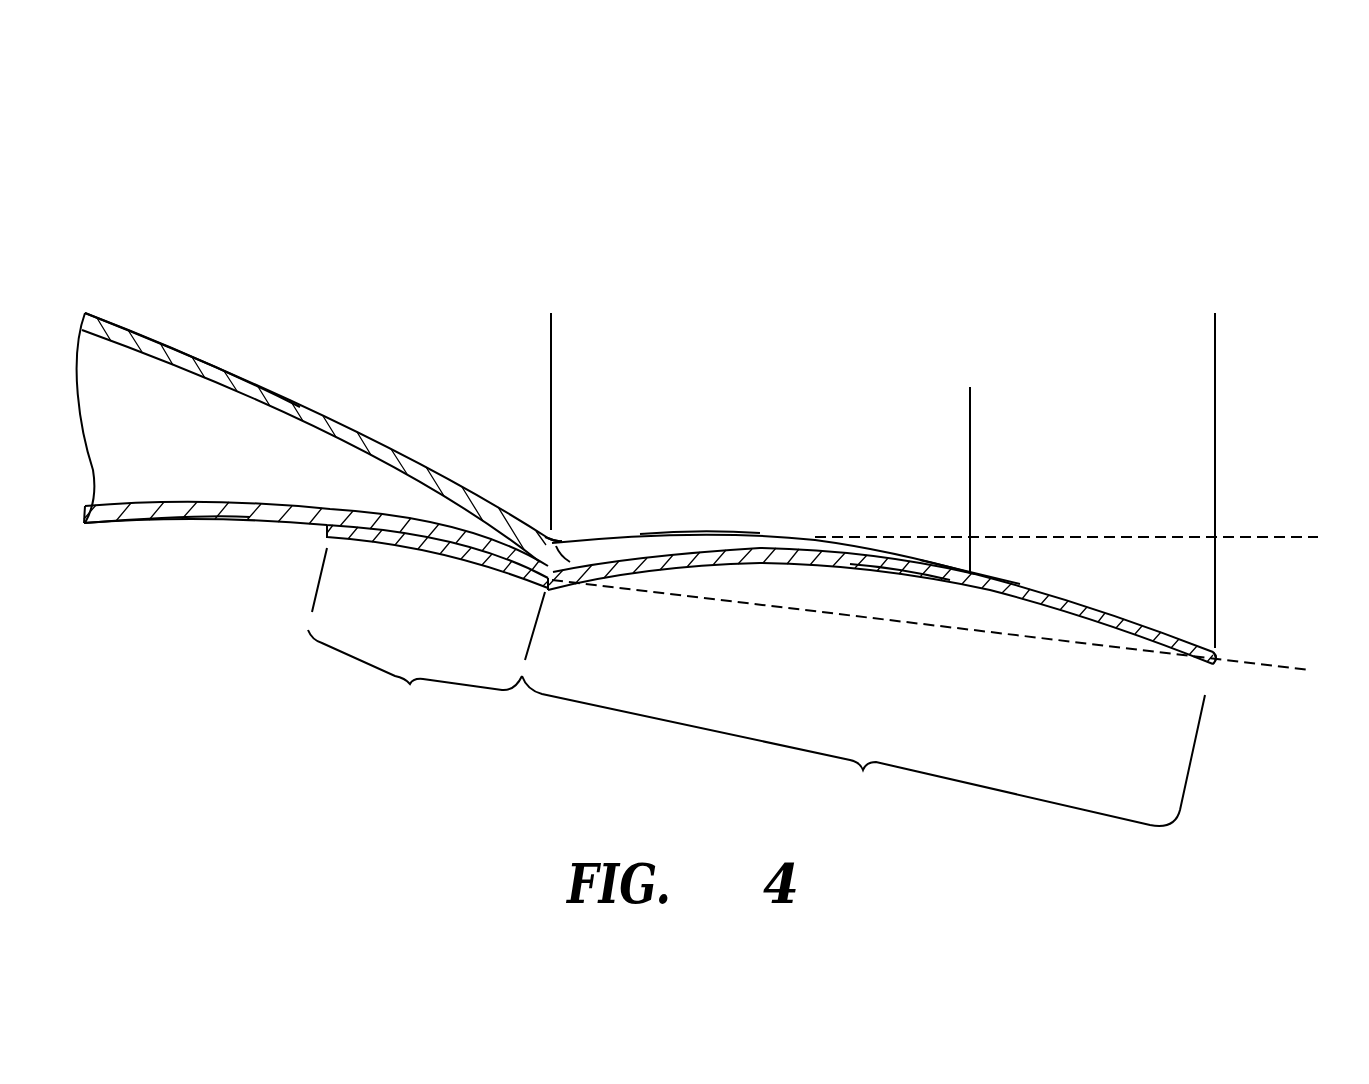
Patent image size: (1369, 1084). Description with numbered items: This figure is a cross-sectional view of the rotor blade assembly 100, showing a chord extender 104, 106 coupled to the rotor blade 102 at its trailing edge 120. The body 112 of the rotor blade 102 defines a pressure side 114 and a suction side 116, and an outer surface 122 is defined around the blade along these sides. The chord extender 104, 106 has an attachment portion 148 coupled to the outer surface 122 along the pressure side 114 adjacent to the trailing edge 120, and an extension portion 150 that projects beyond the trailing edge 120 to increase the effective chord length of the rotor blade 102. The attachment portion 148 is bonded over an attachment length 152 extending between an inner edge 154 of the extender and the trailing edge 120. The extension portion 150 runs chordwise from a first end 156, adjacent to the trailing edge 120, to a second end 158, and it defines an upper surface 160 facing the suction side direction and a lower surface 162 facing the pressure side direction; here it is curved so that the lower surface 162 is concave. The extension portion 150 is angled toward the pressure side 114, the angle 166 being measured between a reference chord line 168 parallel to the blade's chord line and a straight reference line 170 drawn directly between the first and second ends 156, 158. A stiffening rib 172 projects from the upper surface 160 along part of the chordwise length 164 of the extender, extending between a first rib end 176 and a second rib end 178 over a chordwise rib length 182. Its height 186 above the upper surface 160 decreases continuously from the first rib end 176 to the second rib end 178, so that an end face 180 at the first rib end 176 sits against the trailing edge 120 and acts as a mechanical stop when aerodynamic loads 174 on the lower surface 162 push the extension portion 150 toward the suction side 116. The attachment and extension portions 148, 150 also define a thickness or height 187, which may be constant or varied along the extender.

The rotor blade assembly 100 is at (996, 203).
The rotor blade 102 is at (168, 283).
The chord extender 104 is at (1044, 297).
The chord extender 106 is at (1145, 256).
The body 112 is at (174, 345).
The pressure side 114 is at (142, 523).
The suction side 116 is at (260, 383).
The trailing edge 120 is at (520, 530).
The outer surface 122 is at (217, 522).
The attachment portion 148 is at (415, 676).
The extension portion 150 is at (863, 751).
The attachment length 152 is at (529, 631).
The inner edge 154 is at (325, 537).
The first end 156 is at (557, 590).
The second end 158 is at (1219, 661).
The upper surface 160 is at (820, 552).
The lower surface 162 is at (897, 582).
The chordwise length 164 is at (552, 339).
The angle 166 is at (1294, 539).
The reference chord line 168 is at (1087, 535).
The straight reference line 170 is at (1072, 640).
The stiffening rib 172 is at (716, 528).
The aerodynamic loads 174 is at (842, 575).
The first rib end 176 is at (567, 557).
The second rib end 178 is at (968, 571).
The end face 180 is at (568, 540).
The chordwise rib length 182 is at (552, 413).
The height 186 is at (670, 620).
The height 187 is at (377, 596).